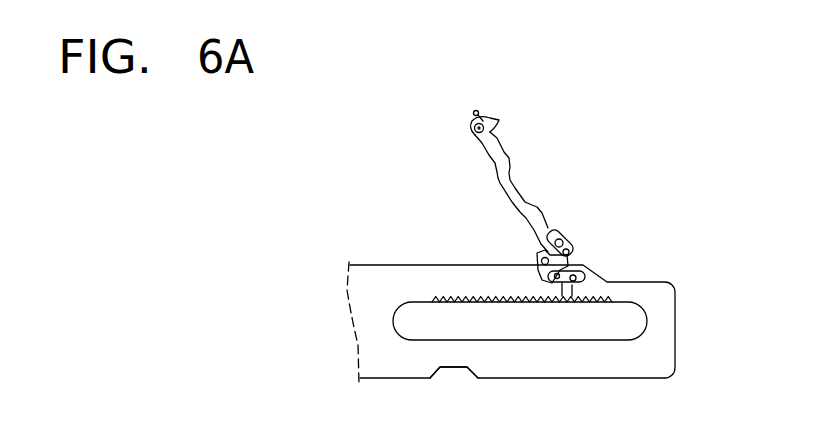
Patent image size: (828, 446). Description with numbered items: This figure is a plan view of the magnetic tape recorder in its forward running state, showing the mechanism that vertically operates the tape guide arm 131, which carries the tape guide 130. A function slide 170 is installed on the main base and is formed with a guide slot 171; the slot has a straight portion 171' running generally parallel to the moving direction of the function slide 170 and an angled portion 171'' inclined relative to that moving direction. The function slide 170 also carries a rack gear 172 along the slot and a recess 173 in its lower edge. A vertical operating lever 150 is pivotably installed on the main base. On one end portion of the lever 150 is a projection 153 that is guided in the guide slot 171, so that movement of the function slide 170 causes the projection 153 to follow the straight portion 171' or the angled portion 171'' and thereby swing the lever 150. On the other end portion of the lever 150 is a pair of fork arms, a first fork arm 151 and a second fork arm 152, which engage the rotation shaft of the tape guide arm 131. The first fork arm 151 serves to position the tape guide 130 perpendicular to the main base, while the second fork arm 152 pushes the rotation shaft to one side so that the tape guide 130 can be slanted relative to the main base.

The tape guide 130 is at (478, 116).
The tape guide arm 131 is at (510, 150).
The vertical operating lever 150 is at (538, 258).
The first fork arm 151 is at (548, 232).
The second fork arm 152 is at (568, 252).
The projection 153 is at (560, 285).
The function slide 170 is at (345, 300).
The guide slot 171 is at (613, 259).
The straight portion 171' is at (610, 352).
The angled portion 171'' is at (511, 352).
The rack gear 172 is at (430, 312).
The recess 173 is at (440, 368).